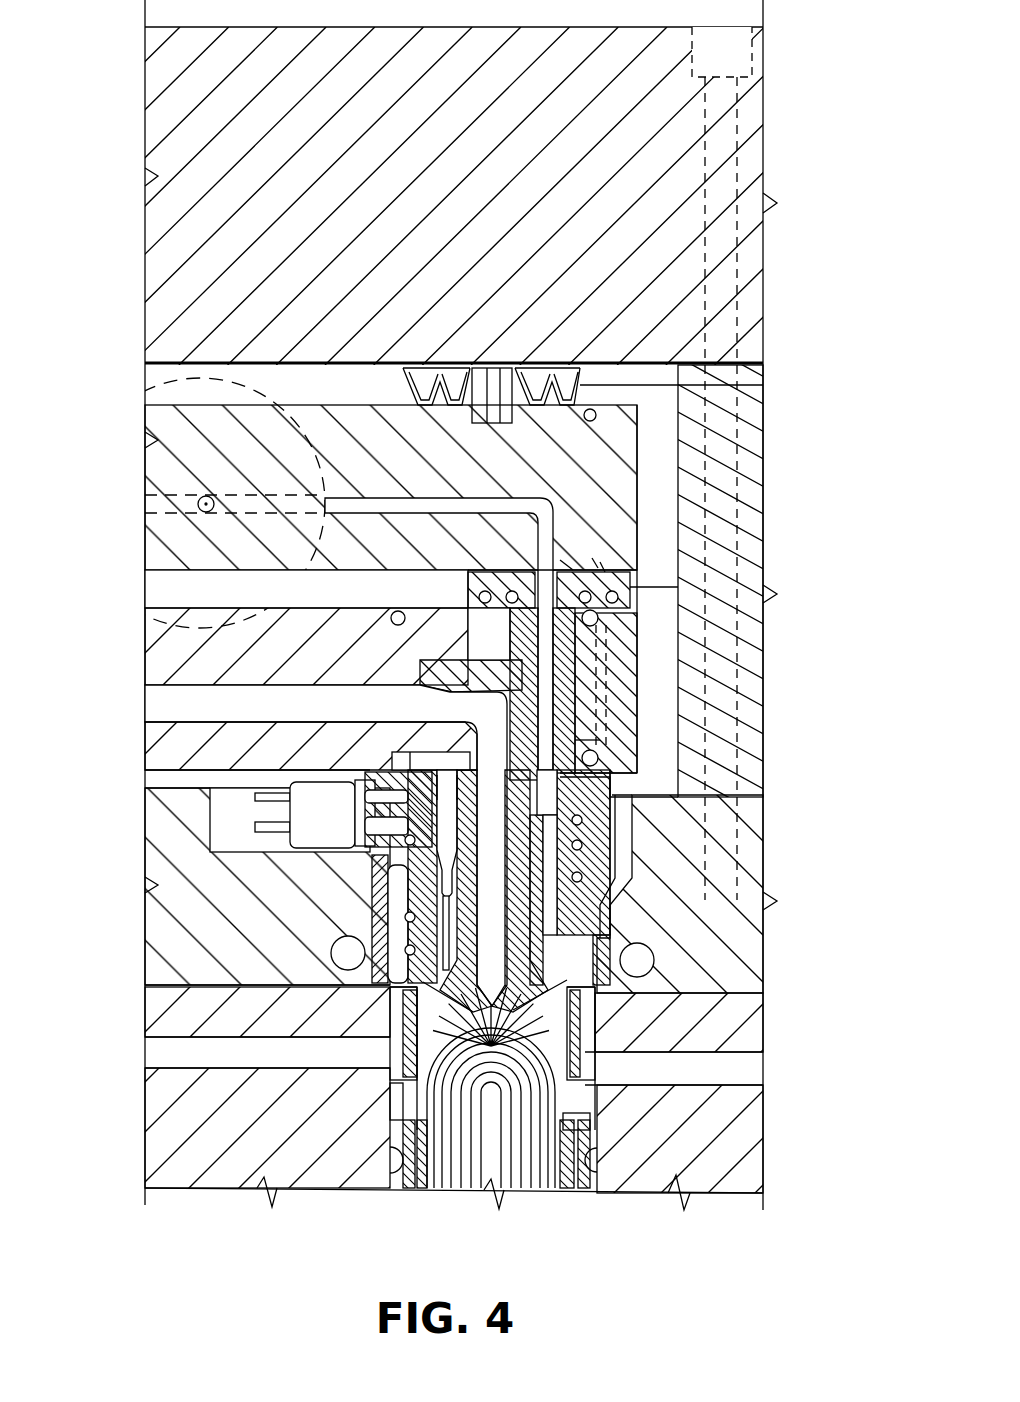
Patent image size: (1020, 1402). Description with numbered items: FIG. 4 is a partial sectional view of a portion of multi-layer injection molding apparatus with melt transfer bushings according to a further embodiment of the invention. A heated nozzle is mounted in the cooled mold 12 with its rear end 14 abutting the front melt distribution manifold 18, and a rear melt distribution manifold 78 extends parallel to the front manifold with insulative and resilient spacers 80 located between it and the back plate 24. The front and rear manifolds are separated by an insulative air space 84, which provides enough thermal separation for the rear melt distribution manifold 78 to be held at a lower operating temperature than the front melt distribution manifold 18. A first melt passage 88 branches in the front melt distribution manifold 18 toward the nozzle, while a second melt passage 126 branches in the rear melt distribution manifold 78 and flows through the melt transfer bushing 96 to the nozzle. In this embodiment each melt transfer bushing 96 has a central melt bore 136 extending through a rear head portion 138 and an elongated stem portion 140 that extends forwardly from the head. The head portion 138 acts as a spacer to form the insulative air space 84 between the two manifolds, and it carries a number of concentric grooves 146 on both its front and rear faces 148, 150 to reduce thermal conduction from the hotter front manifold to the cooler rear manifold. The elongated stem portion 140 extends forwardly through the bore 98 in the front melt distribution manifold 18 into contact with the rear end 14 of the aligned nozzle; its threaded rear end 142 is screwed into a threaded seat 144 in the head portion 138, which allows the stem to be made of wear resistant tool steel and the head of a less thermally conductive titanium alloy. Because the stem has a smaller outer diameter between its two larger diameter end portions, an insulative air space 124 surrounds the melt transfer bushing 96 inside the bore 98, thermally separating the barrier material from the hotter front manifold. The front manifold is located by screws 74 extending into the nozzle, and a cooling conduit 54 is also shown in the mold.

The mold 12 is at (597, 848).
The rear end of heated nozzle 14 is at (640, 815).
The front melt distribution manifold 18 is at (170, 640).
The back plate 24 is at (758, 148).
The cooling conduit 54 is at (633, 960).
The screws 74 is at (560, 744).
The rear melt distribution manifold 78 is at (165, 470).
The insulative and resilient spacers 80 is at (763, 385).
The insulative air space 84 is at (175, 580).
The first melt passage 88 is at (175, 703).
The melt transfer bushing 96 is at (560, 663).
The bore 98 is at (570, 748).
The insulative air space 124 is at (565, 690).
The second melt passage 126 is at (160, 496).
The central melt bore 136 is at (570, 722).
The rear head portion 138 is at (620, 587).
The elongated stem portion 140 is at (640, 798).
The threaded rear end 142 is at (570, 570).
The threaded seat 144 is at (520, 568).
The concentric grooves 146 is at (605, 572).
The front face of rear head portion 148 is at (595, 633).
The rear face of rear head portion 150 is at (598, 568).